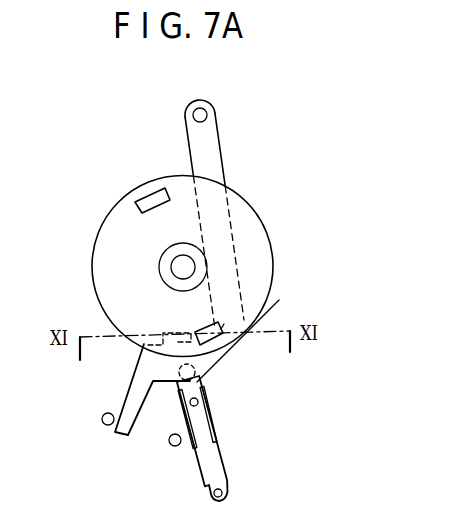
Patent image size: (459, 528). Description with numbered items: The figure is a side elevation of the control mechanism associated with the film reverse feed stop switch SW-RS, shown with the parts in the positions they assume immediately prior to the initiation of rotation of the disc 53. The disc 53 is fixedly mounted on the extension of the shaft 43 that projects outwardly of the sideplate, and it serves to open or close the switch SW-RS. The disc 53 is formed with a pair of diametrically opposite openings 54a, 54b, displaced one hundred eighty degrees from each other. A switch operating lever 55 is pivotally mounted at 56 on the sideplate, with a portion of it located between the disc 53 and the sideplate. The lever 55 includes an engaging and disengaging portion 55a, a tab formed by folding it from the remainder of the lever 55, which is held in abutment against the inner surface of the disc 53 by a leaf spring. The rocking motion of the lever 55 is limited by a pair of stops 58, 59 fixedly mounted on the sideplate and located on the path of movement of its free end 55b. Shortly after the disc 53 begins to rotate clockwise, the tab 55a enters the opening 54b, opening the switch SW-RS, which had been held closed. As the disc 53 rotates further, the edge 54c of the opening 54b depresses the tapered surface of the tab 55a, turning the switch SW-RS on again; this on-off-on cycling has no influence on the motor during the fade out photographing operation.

The shaft 43 is at (170, 264).
The disc 53 is at (264, 238).
The opening 54a is at (150, 198).
The opening 54b is at (214, 346).
The edge of opening 54c is at (258, 337).
The switch operating lever 55 is at (222, 163).
The engaging and disengaging portion 55a is at (173, 327).
The free end 55b is at (132, 402).
The pivot 56 is at (207, 115).
The stop 58 is at (104, 424).
The stop 59 is at (172, 446).
The film reverse feed stop switch SW-RS is at (222, 418).